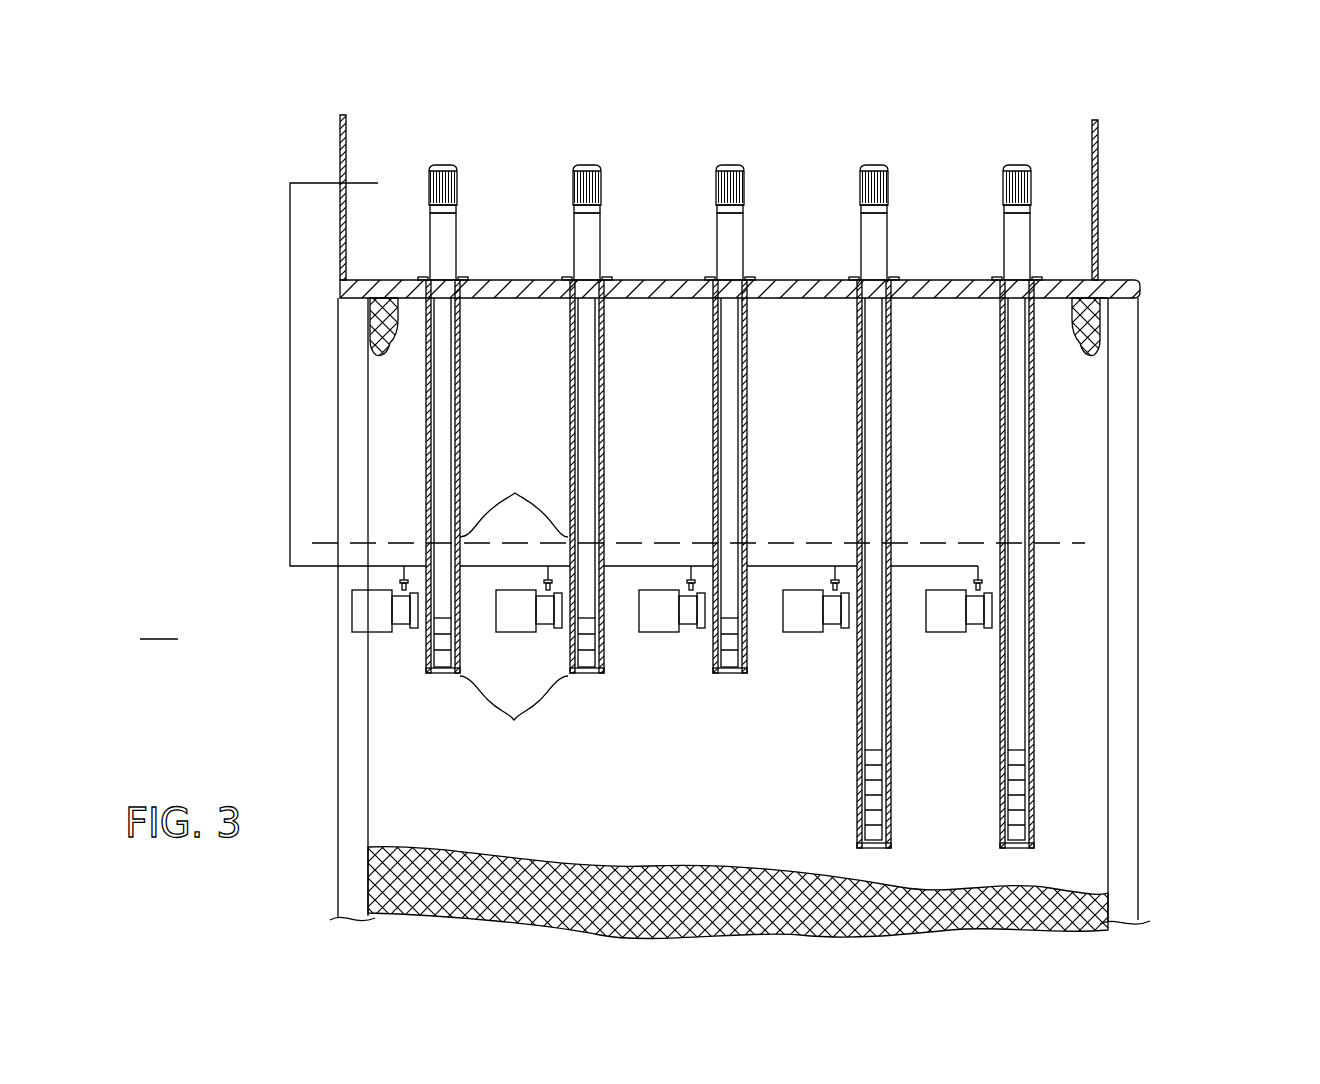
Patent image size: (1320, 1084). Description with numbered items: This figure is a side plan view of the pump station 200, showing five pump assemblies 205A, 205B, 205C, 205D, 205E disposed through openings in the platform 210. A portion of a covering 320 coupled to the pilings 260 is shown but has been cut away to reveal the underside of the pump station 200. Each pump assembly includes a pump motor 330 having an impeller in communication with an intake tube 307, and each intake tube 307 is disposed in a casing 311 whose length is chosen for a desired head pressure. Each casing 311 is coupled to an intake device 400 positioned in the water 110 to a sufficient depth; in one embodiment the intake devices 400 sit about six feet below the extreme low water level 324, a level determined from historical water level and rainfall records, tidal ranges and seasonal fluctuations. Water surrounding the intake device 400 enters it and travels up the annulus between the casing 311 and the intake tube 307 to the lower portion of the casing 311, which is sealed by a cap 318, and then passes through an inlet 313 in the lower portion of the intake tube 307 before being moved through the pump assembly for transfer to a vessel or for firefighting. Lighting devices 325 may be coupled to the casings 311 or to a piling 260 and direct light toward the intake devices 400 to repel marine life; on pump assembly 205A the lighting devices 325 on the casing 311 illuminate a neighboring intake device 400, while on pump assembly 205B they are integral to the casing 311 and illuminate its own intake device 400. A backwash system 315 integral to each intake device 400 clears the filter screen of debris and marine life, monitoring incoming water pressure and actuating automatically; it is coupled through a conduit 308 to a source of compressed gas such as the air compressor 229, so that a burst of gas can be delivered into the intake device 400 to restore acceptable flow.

The water 110 is at (161, 625).
The pump station 200 is at (1180, 164).
The pump assembly 205A is at (452, 121).
The pump assembly 205B is at (601, 121).
The pump assembly 205C is at (749, 121).
The pump assembly 205D is at (896, 121).
The pump assembly 205E is at (1047, 114).
The platform 210 is at (1125, 304).
The air compressor 229 is at (292, 183).
The piling 260 is at (345, 810).
The intake tube 307 is at (441, 472).
The conduit 308 is at (290, 487).
The casing 311 is at (461, 332).
The inlet 313 is at (437, 676).
The backwash system 315 is at (384, 579).
The cap 318 is at (445, 676).
The covering 320 is at (385, 326).
The extreme low water level 324 is at (1080, 548).
The lighting devices 325 is at (515, 493).
The pump motor 330 is at (458, 183).
The intake device 400 is at (352, 622).